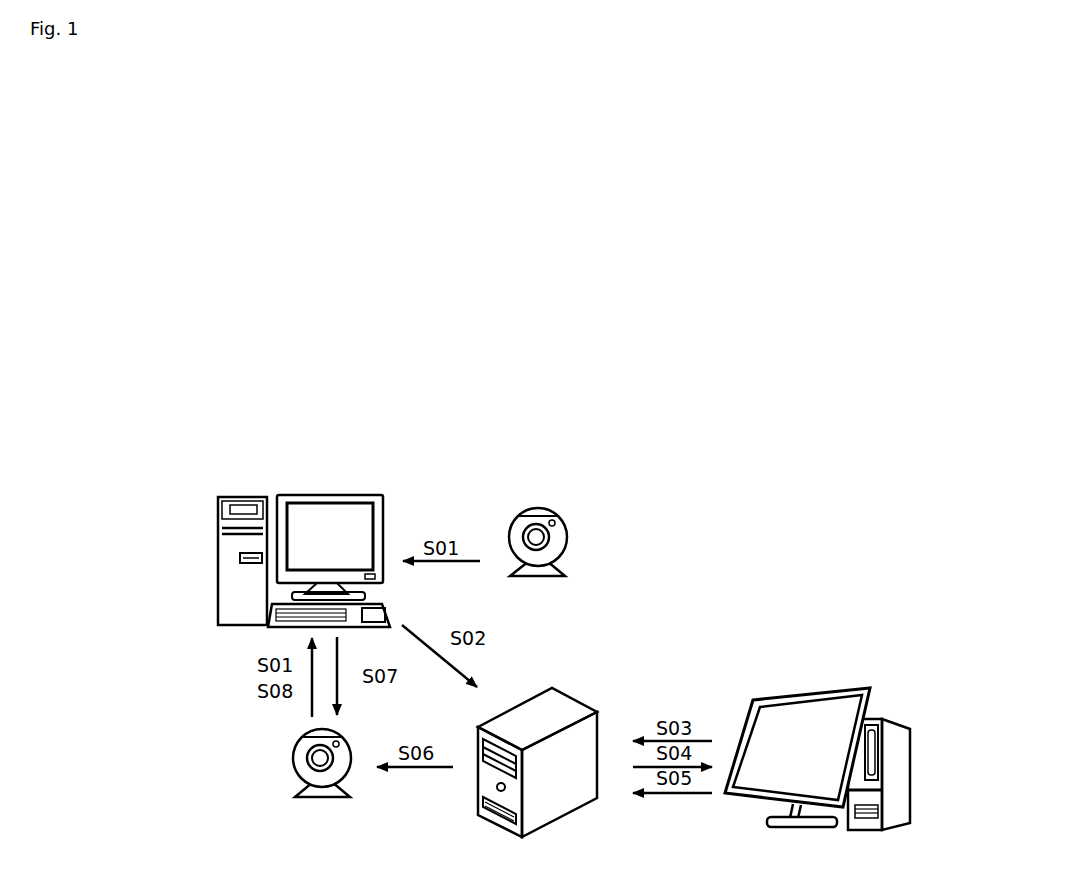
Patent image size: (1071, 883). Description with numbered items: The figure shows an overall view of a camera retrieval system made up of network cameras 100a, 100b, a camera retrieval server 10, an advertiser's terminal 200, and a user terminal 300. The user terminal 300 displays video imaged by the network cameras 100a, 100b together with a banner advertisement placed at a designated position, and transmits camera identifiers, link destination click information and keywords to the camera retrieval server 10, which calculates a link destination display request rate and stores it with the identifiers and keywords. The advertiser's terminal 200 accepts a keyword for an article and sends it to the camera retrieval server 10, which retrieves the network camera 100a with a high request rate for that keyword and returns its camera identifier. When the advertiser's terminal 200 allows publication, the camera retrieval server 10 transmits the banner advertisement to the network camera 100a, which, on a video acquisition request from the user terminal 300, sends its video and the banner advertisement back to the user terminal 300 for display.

The camera retrieval server 10 is at (570, 705).
The network camera 100a is at (298, 755).
The network camera 100b is at (562, 540).
The advertiser's terminal 200 is at (898, 730).
The user terminal 300 is at (357, 517).